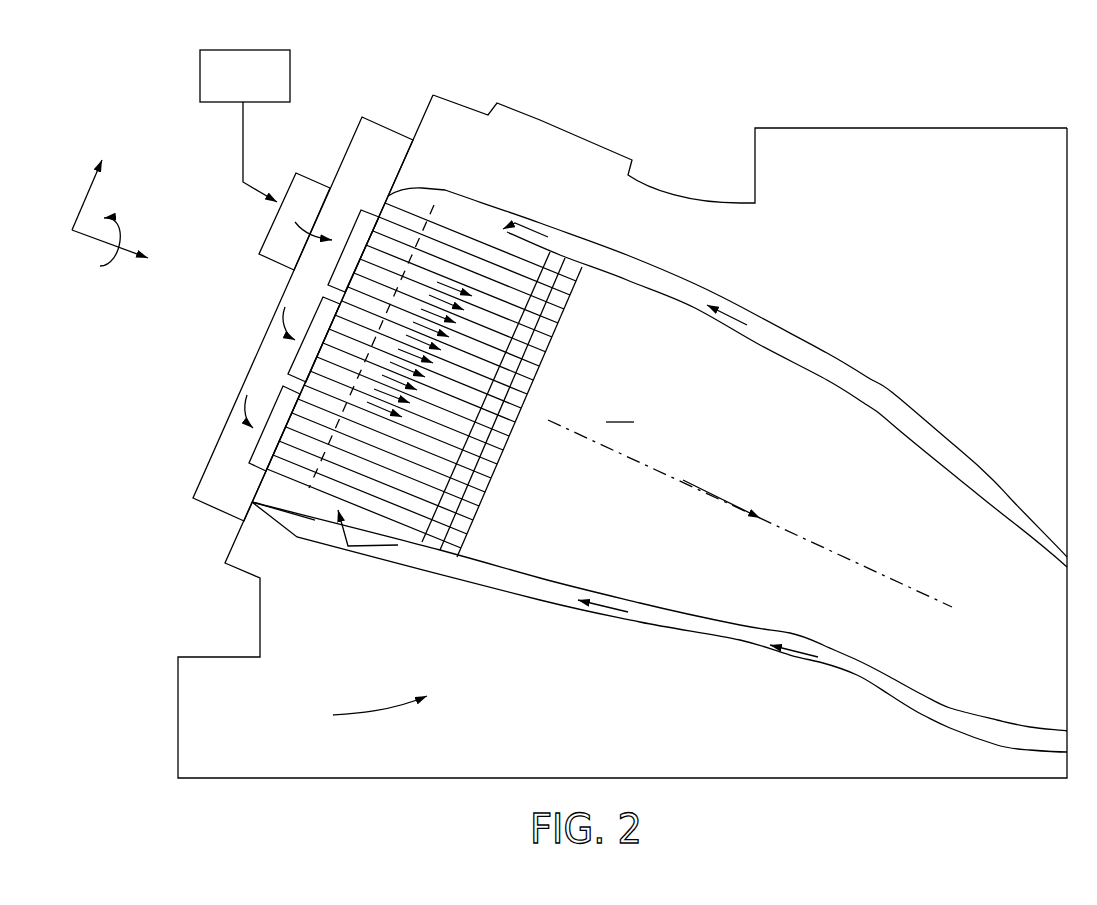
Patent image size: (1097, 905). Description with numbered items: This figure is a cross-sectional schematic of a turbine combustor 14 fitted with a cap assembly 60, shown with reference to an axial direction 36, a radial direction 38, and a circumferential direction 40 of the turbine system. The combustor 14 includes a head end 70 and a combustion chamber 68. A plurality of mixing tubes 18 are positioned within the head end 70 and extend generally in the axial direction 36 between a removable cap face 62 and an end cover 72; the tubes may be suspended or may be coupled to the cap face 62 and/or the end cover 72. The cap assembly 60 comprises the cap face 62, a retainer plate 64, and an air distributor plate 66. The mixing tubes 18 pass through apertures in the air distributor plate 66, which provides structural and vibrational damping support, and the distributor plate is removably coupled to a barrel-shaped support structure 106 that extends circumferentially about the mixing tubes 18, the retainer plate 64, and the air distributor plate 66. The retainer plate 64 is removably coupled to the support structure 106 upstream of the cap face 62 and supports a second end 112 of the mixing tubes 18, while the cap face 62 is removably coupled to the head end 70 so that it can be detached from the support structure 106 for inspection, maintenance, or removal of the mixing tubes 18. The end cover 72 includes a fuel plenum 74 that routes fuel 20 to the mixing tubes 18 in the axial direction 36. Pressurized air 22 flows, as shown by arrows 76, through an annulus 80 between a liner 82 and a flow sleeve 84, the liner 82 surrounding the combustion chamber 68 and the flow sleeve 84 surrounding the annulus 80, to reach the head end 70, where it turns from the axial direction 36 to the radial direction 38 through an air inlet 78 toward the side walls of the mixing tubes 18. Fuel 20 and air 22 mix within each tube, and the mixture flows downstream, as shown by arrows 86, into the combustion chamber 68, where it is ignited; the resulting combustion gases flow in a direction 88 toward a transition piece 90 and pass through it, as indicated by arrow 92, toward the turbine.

The combustor 14 is at (622, 401).
The mixing tubes 18 is at (445, 232).
The fuel 20 is at (200, 76).
The pressurized air 22 is at (375, 713).
The axial direction 36 is at (610, 450).
The radial direction 38 is at (84, 198).
The circumferential direction 40 is at (123, 230).
The cap assembly 60 is at (422, 554).
The cap face 62 is at (573, 290).
The retainer plate 64 is at (551, 252).
The air distributor plate 66 is at (320, 465).
The combustion chamber 68 is at (620, 410).
The head end 70 is at (572, 64).
The end cover 72 is at (381, 121).
The fuel plenum 74 is at (357, 178).
The air flow arrows 76 is at (538, 222).
The air inlet 78 is at (489, 218).
The annulus 80 is at (822, 364).
The liner 82 is at (773, 354).
The flow sleeve 84 is at (727, 372).
The fuel-air mixture flow arrows 86 is at (460, 507).
The combustion gas flow direction 88 is at (722, 522).
The transition piece 90 is at (950, 472).
The combustion gas exit arrow 92 is at (1040, 653).
The support structure 106 is at (418, 195).
The second end of mixing tubes 112 is at (399, 548).